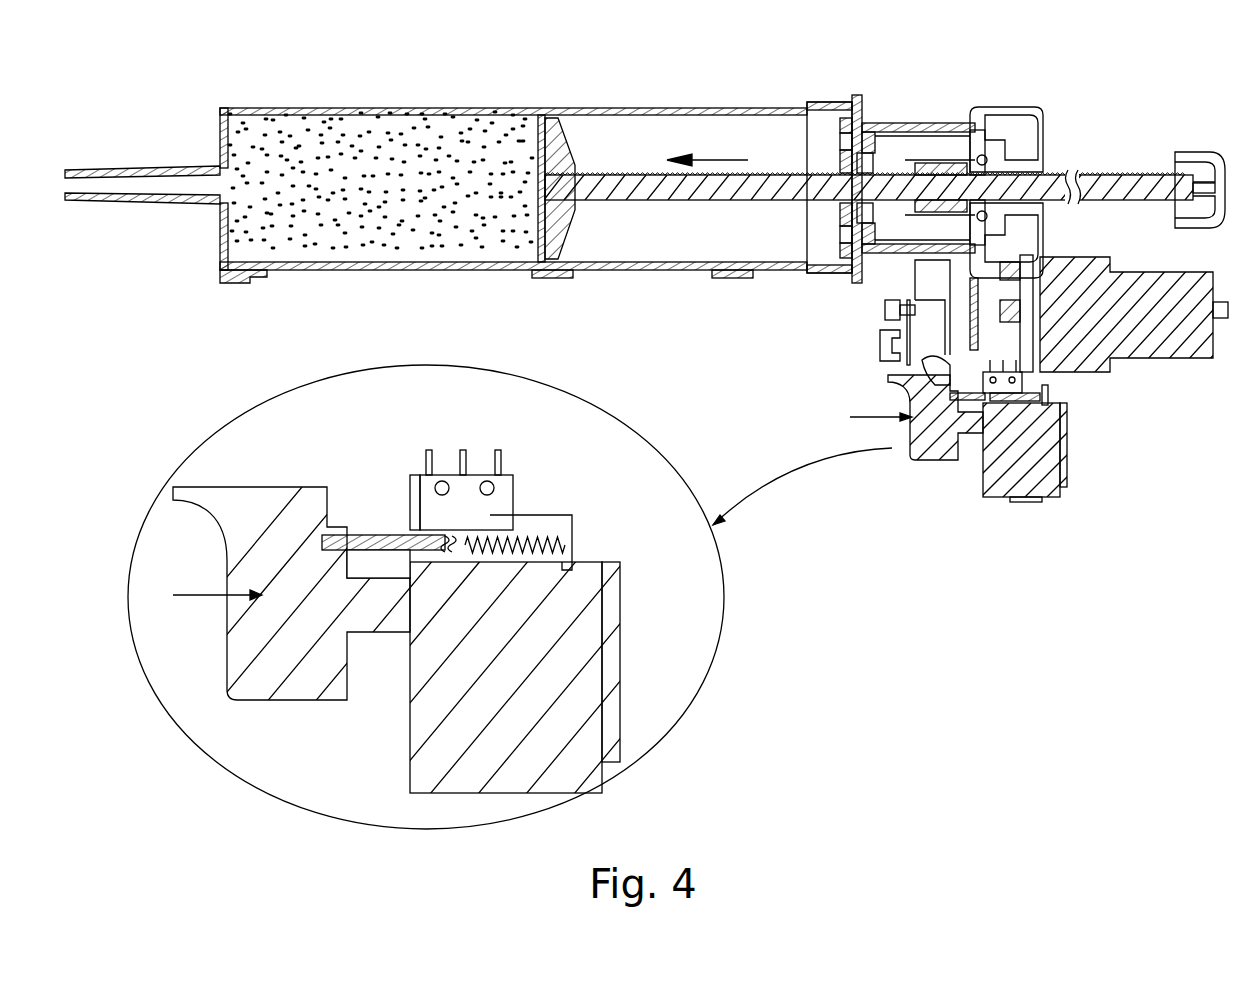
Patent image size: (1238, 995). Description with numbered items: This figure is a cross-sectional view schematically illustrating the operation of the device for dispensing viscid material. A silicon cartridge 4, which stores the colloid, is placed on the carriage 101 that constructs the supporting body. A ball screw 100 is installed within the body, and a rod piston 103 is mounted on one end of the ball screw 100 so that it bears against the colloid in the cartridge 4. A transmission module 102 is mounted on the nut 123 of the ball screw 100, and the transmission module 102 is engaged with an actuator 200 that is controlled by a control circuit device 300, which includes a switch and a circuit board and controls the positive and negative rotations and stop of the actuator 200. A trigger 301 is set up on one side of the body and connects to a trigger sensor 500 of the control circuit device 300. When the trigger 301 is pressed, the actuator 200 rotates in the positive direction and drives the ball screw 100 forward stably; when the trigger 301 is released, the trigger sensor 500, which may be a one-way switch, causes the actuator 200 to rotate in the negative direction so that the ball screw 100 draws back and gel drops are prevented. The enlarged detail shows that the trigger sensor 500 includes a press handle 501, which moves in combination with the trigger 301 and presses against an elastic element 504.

The silicon cartridge 4 is at (375, 145).
The ball screw 100 is at (1127, 188).
The carriage 101 is at (735, 279).
The transmission module 102 is at (997, 128).
The rod piston 103 is at (548, 150).
The nut 123 is at (932, 163).
The actuator 200 is at (1160, 345).
The control circuit device 300 is at (882, 327).
The trigger 301 is at (912, 457).
The trigger sensor 500 is at (490, 508).
The press handle 501 is at (382, 540).
The elastic element 504 is at (560, 555).